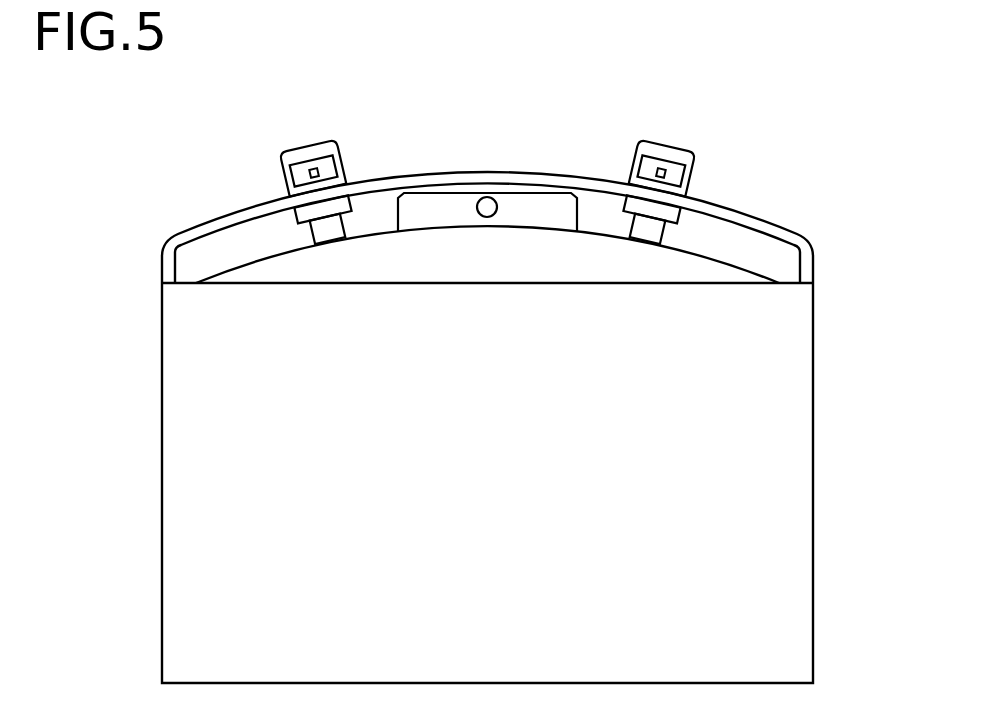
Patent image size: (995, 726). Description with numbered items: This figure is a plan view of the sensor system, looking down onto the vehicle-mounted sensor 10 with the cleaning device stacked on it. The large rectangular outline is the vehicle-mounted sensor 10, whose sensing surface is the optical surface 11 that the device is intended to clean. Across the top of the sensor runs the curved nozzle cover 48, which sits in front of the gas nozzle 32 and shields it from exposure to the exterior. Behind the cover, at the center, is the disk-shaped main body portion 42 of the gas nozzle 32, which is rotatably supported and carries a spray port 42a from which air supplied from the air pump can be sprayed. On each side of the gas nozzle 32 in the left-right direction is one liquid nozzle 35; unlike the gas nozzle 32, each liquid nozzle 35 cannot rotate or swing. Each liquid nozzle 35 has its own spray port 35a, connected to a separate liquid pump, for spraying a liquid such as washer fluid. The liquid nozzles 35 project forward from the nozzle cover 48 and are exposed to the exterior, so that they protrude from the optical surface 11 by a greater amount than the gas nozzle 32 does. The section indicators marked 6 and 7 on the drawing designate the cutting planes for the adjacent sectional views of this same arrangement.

The vehicle-mounted sensor 10 is at (806, 472).
The optical surface 11 is at (731, 255).
The gas nozzle 32 is at (579, 207).
The liquid nozzle 35 is at (283, 162).
The spray port 35a is at (314, 178).
The main body portion 42 is at (413, 212).
The spray port 42a is at (486, 216).
The nozzle cover 48 is at (787, 225).
The section line 6 is at (487, 146).
The section line 7 is at (303, 125).